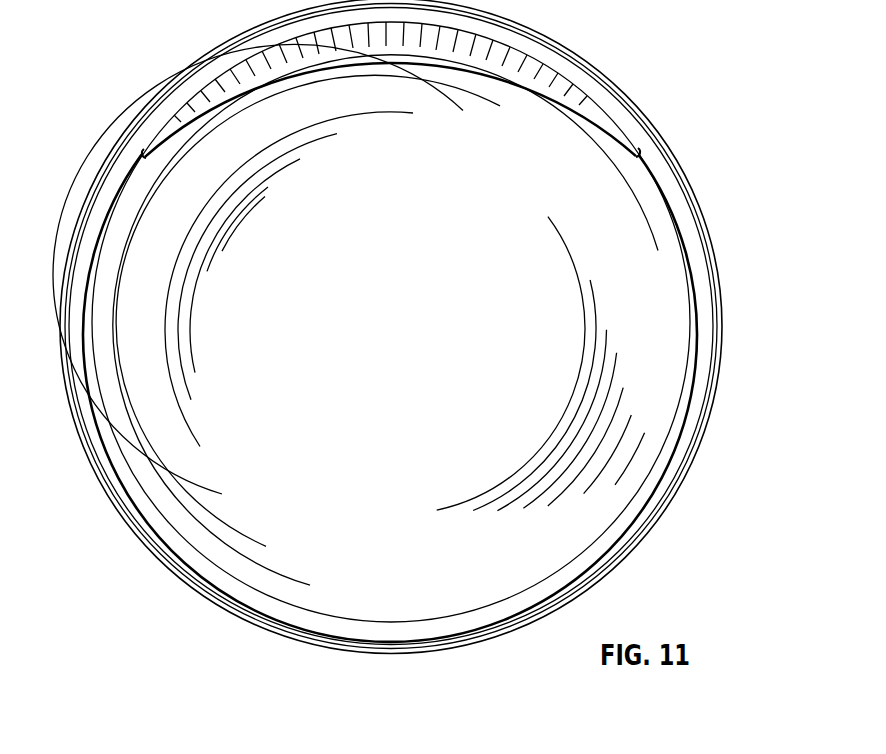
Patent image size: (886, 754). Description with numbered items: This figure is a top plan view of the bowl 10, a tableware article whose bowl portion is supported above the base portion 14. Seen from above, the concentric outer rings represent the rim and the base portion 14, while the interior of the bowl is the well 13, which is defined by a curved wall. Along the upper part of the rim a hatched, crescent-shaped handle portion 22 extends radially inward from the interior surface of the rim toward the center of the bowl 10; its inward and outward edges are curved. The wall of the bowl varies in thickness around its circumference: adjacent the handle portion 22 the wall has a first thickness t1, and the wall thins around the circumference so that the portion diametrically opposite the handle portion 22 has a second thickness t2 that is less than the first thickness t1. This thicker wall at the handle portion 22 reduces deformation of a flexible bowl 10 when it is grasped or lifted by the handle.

The bowl 10 is at (135, 28).
The well 13 is at (404, 337).
The base portion 14 is at (650, 120).
The handle portion 22 is at (287, 55).
The first thickness t1 is at (132, 225).
The second thickness t2 is at (392, 680).